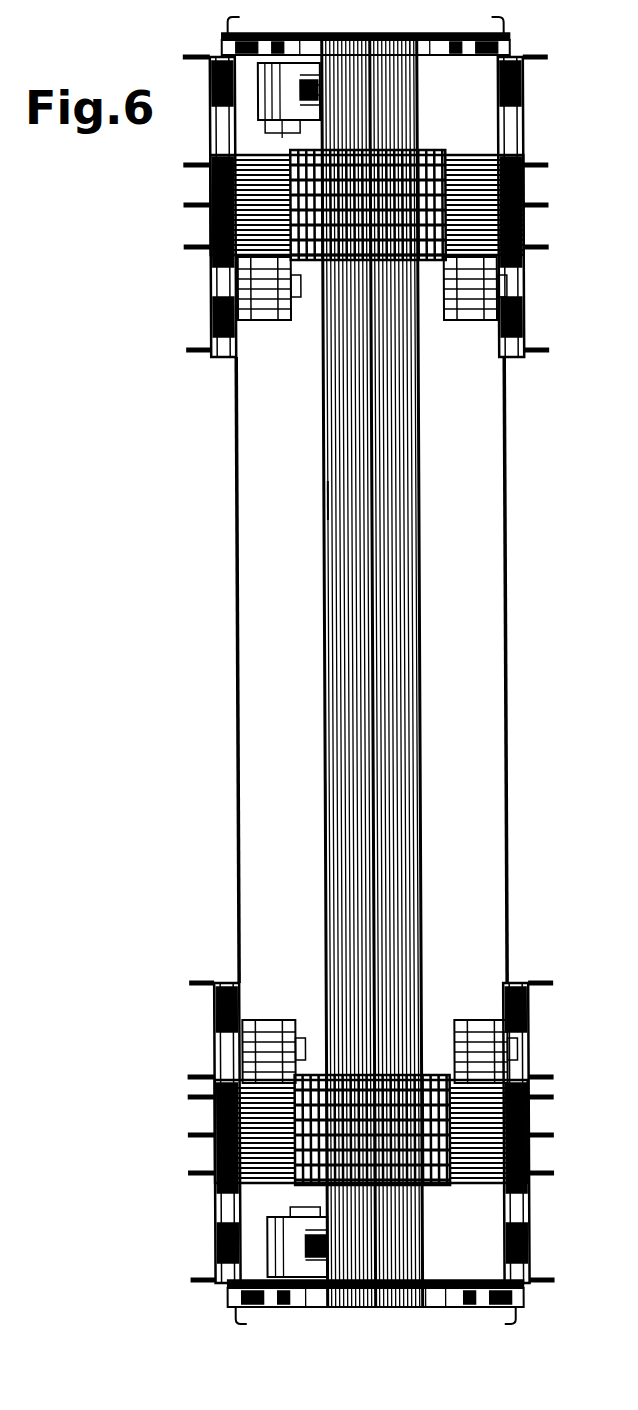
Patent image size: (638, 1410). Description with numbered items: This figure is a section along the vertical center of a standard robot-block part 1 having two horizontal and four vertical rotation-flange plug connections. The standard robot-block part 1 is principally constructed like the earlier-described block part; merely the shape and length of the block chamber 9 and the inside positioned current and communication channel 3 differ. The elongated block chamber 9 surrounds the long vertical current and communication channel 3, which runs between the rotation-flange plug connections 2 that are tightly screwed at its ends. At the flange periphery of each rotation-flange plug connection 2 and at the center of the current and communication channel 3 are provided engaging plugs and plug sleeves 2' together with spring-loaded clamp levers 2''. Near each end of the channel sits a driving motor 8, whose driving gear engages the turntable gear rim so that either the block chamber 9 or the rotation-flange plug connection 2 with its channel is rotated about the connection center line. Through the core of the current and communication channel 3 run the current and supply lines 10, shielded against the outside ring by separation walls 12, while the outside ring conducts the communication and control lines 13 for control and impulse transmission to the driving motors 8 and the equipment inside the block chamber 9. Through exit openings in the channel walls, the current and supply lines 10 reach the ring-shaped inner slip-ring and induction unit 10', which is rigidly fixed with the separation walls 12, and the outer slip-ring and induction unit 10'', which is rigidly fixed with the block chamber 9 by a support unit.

The standard robot-block part 1 is at (254, 731).
The rotation-flange plug connection 2 is at (262, 1180).
The engaging plugs and plug sleeves 2' is at (543, 1133).
The spring-loaded clamp levers 2'' is at (376, 1327).
The current and communication channel 3 is at (458, 152).
The driving motor 8 is at (488, 1020).
The block chamber 9 is at (503, 595).
The current and supply lines 10 is at (449, 672).
The inner slip-ring and induction unit 10' is at (366, 91).
The outer slip-ring and induction unit 10'' is at (468, 321).
The separation walls 12 is at (418, 657).
The communication and control lines 13 is at (324, 519).